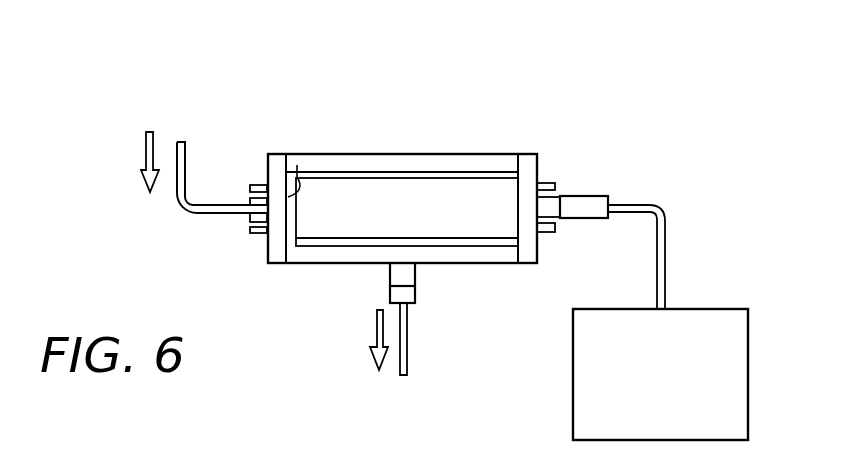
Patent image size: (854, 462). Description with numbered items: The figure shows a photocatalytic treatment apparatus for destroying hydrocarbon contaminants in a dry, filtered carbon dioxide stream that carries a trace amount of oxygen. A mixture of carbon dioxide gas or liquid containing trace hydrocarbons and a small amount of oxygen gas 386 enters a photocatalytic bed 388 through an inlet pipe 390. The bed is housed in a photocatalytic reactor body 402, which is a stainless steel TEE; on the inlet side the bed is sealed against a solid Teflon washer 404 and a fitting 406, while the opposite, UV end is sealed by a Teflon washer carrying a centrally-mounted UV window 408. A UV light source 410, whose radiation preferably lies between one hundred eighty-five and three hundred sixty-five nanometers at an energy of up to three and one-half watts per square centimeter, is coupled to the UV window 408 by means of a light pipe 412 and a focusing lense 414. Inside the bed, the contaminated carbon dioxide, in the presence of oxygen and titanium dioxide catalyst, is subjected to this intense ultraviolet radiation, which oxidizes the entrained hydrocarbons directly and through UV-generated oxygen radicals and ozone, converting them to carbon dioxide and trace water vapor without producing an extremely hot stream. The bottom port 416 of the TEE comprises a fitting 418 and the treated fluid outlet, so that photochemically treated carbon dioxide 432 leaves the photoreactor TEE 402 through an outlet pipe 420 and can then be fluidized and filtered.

The contaminated carbon dioxide mixture 386 is at (155, 107).
The photocatalytic bed 388 is at (462, 182).
The inlet pipe 390 is at (208, 208).
The photocatalytic reactor body 402 is at (403, 153).
The solid Teflon washer 404 is at (297, 165).
The fitting 406 is at (252, 203).
The UV window 408 is at (548, 207).
The UV light source 410 is at (718, 321).
The light pipe 412 is at (665, 221).
The focusing lense 414 is at (597, 203).
The bottom port 416 is at (390, 273).
The fitting 418 is at (408, 293).
The outlet pipe 420 is at (405, 337).
The photochemically treated carbon dioxide 432 is at (323, 413).